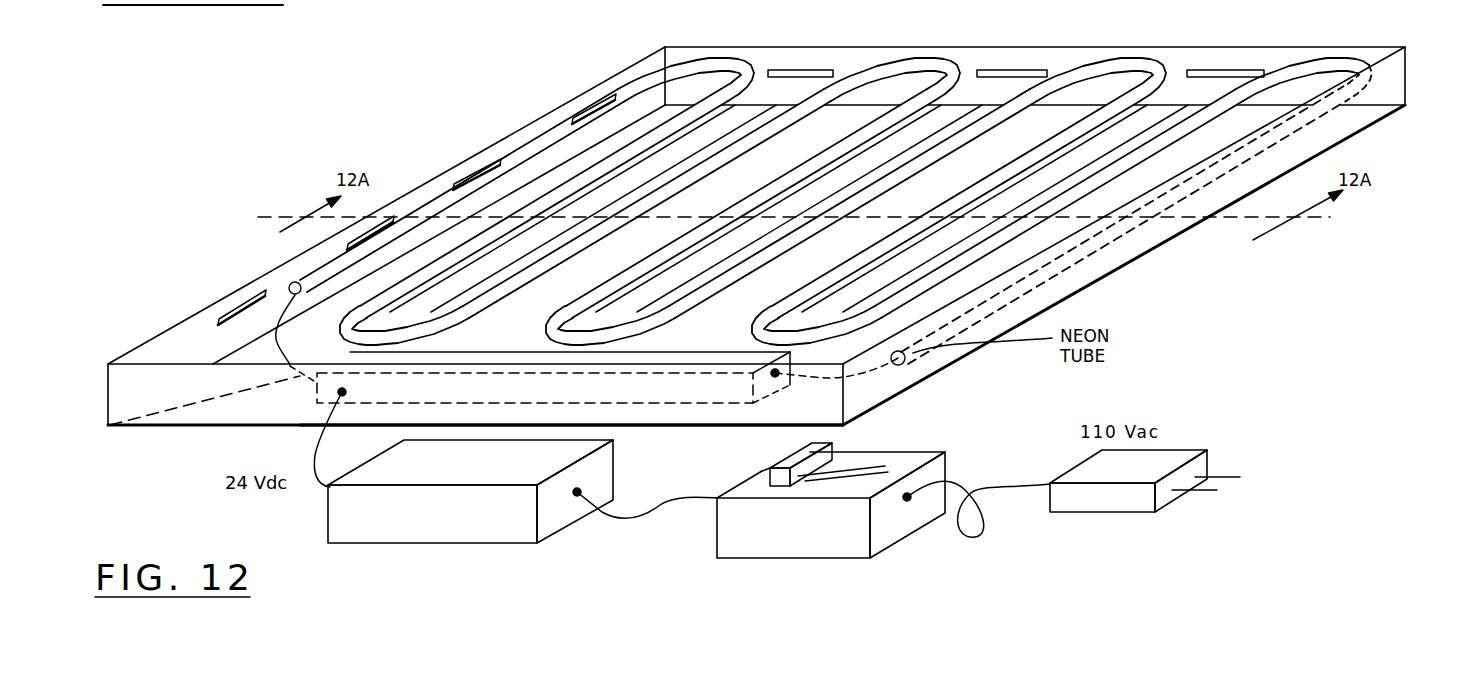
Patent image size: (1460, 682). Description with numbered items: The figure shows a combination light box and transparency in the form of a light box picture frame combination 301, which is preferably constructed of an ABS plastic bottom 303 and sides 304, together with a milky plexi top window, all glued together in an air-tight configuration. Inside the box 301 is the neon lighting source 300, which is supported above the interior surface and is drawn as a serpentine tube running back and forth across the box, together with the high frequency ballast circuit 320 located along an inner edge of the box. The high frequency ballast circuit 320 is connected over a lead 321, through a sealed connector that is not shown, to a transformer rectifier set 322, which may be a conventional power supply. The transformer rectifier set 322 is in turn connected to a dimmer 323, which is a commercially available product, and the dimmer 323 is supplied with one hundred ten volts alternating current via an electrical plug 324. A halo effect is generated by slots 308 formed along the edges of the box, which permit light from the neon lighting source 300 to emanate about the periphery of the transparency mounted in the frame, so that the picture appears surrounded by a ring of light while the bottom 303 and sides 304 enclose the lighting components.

The neon lighting source 300 is at (653, 146).
The light box picture frame combination 301 is at (1352, 140).
The bottom 303 is at (667, 427).
The sides 304 is at (157, 402).
The slots 308 is at (383, 228).
The high frequency ballast circuit 320 is at (465, 401).
The lead 321 is at (316, 452).
The transformer rectifier set 322 is at (480, 474).
The dimmer 323 is at (815, 549).
The electrical plug 324 is at (1155, 475).